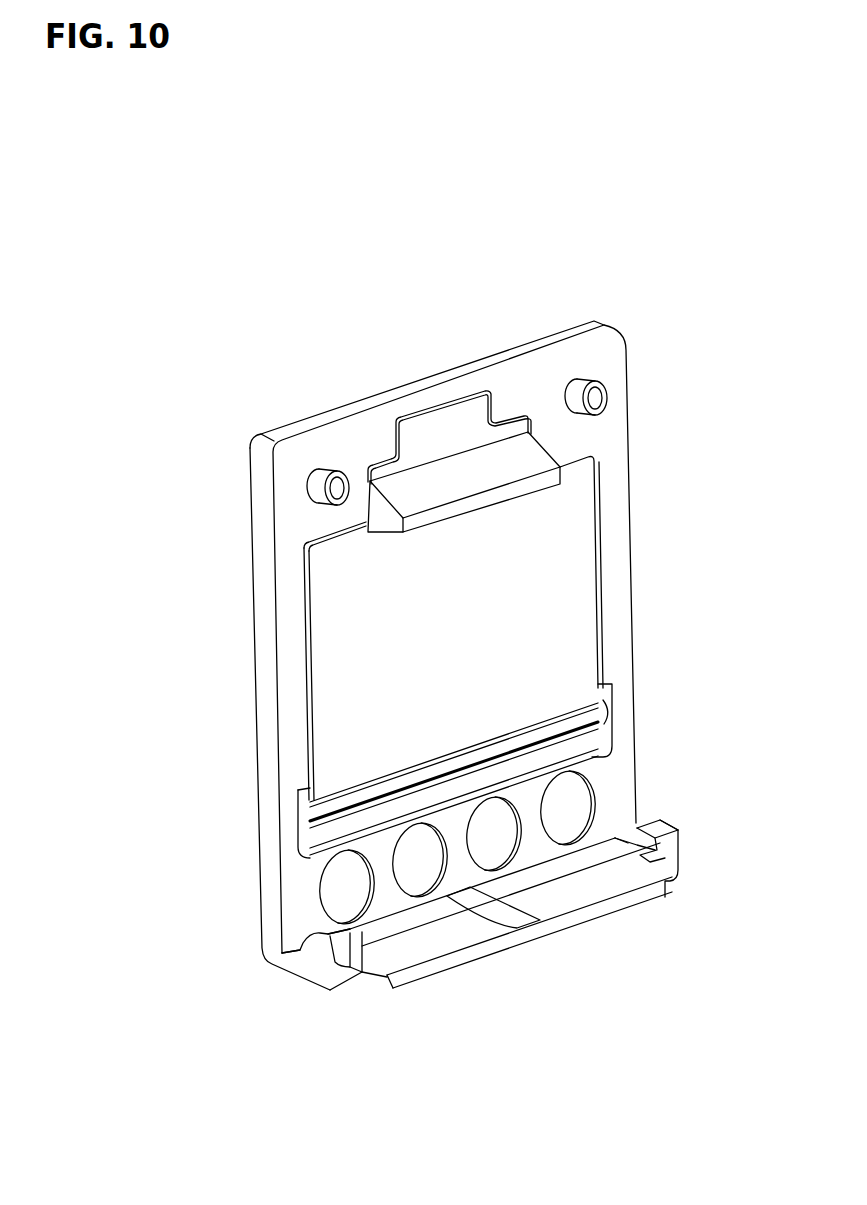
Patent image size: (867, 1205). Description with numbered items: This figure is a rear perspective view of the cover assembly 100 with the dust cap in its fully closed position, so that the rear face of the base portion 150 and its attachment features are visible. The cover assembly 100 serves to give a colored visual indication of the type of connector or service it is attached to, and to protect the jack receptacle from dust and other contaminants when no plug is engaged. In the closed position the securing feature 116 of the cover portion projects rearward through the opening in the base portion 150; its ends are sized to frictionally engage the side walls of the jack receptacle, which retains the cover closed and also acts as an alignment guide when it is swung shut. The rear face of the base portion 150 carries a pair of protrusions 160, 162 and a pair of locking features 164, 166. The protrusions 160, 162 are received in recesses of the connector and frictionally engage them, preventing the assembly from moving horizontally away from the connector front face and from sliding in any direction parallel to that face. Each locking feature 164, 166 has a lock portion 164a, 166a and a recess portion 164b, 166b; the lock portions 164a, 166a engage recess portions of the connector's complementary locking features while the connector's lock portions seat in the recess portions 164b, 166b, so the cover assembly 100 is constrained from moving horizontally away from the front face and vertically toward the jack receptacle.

The cover assembly 100 is at (246, 391).
The securing feature 116 is at (483, 475).
The base portion 150 is at (270, 878).
The protrusion 160 is at (576, 392).
The protrusion 162 is at (312, 482).
The locking feature 164 is at (648, 847).
The lock portion 164a is at (665, 826).
The recess portion 164b is at (625, 852).
The locking feature 166 is at (318, 950).
The lock portion 166a is at (347, 950).
The recess portion 166b is at (288, 958).